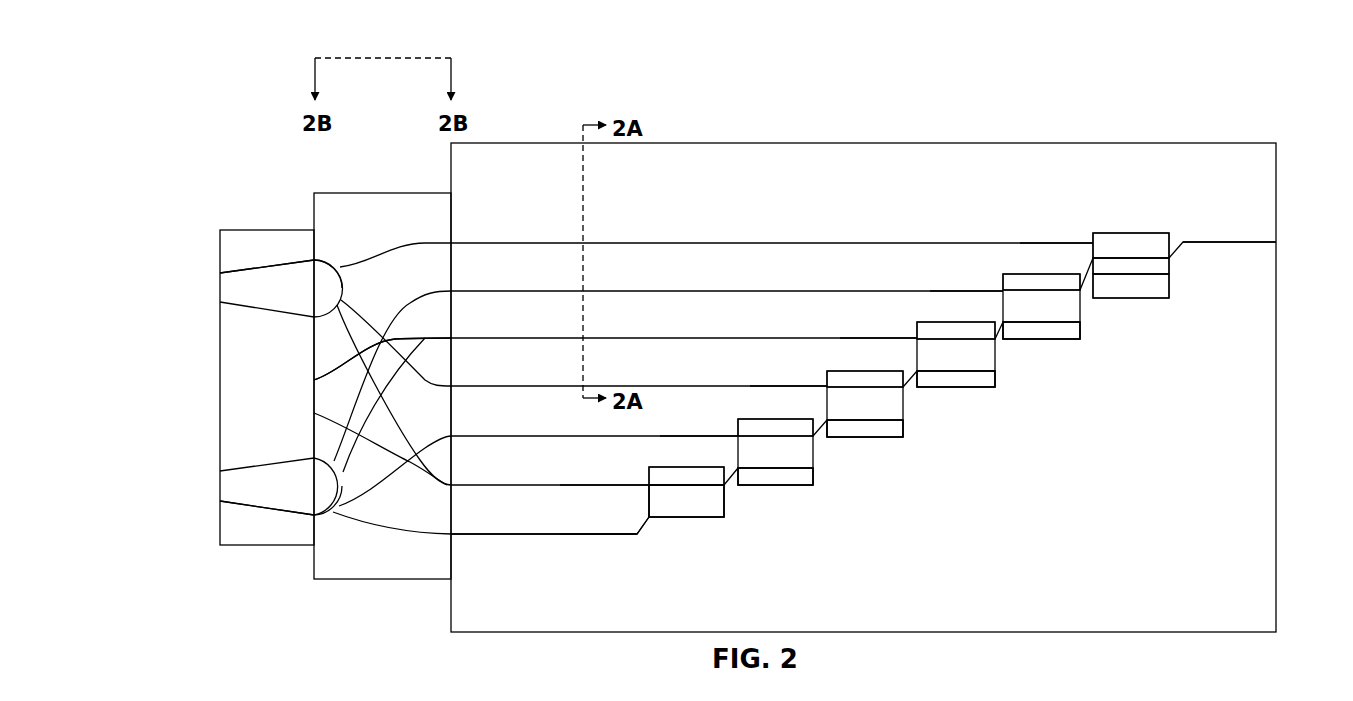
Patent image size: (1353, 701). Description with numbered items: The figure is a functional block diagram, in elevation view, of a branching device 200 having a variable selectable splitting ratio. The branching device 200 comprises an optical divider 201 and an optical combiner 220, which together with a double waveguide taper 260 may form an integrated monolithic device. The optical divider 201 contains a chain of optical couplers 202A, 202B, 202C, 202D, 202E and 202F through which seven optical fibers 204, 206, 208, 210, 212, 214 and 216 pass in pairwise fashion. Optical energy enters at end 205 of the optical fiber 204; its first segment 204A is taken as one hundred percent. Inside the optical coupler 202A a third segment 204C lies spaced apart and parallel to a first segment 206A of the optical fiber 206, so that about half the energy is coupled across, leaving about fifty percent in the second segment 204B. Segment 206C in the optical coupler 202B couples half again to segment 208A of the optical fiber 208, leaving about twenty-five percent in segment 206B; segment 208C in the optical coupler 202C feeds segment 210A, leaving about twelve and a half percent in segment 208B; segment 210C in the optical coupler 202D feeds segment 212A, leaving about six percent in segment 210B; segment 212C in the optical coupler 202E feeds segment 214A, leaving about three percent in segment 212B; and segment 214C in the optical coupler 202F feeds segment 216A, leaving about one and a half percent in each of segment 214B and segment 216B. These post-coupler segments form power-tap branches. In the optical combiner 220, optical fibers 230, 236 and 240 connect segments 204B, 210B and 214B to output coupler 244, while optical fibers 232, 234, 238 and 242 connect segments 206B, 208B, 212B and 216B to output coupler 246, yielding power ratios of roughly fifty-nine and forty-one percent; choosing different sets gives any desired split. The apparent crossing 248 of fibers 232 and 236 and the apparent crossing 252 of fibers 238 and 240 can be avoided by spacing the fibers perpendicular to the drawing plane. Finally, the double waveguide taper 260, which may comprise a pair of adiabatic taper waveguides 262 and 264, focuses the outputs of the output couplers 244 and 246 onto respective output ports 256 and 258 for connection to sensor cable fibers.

The branching device 200 is at (266, 79).
The optical divider 201 is at (812, 143).
The optical coupler 202A is at (1163, 286).
The optical coupler 202B is at (1070, 332).
The optical coupler 202C is at (983, 385).
The optical coupler 202D is at (895, 432).
The optical coupler 202E is at (805, 480).
The optical coupler 202F is at (712, 520).
The optical fiber waveguide 204 is at (961, 233).
The first segment of optical fiber 204 204A is at (1178, 250).
The second segment of optical fiber 204 204B is at (1090, 245).
The third segment of optical fiber 204 204C is at (1120, 258).
The end of optical fiber 204 205 is at (1262, 242).
The optical fiber waveguide 206 is at (873, 279).
The first segment of optical fiber 206 206A is at (1133, 276).
The segment of optical fiber 206 206B is at (999, 292).
The segment of optical fiber 206 206C is at (1036, 290).
The optical fiber waveguide 208 is at (783, 327).
The segment of optical fiber 208 208A is at (1044, 325).
The segment of optical fiber 208 208B is at (912, 340).
The segment of optical fiber 208 208C is at (950, 339).
The optical fiber waveguide 210 is at (716, 380).
The segment of optical fiber 210 210A is at (954, 376).
The segment of optical fiber 210 210B is at (822, 388).
The segment of optical fiber 210 210C is at (860, 387).
The optical fiber waveguide 212 is at (607, 433).
The segment of optical fiber 212 212A is at (867, 422).
The segment of optical fiber 212 212B is at (733, 437).
The segment of optical fiber 212 212C is at (770, 436).
The optical fiber waveguide 214 is at (541, 483).
The segment of optical fiber 214 214A is at (770, 470).
The segment of optical fiber 214 214B is at (648, 486).
The segment of optical fiber 214 214C is at (683, 485).
The optical fiber waveguide 216 is at (531, 533).
The segment of optical fiber 216 216A is at (688, 520).
The segment of optical fiber 216 216B is at (602, 534).
The optical combiner 220 is at (403, 193).
The optical fiber 230 is at (447, 243).
The optical fiber 232 is at (444, 291).
The optical fiber 234 is at (444, 338).
The optical fiber 236 is at (444, 386).
The optical fiber 238 is at (453, 436).
The optical fiber 240 is at (441, 488).
The optical fiber 242 is at (433, 537).
The output coupler 244 is at (334, 258).
The output coupler 246 is at (330, 518).
The apparent crossing 248 is at (314, 380).
The apparent crossing 252 is at (314, 413).
The output port 256 is at (220, 284).
The output port 258 is at (220, 492).
The double waveguide taper 260 is at (292, 230).
The adiabatic taper waveguide 262 is at (281, 288).
The adiabatic taper waveguide 264 is at (279, 486).